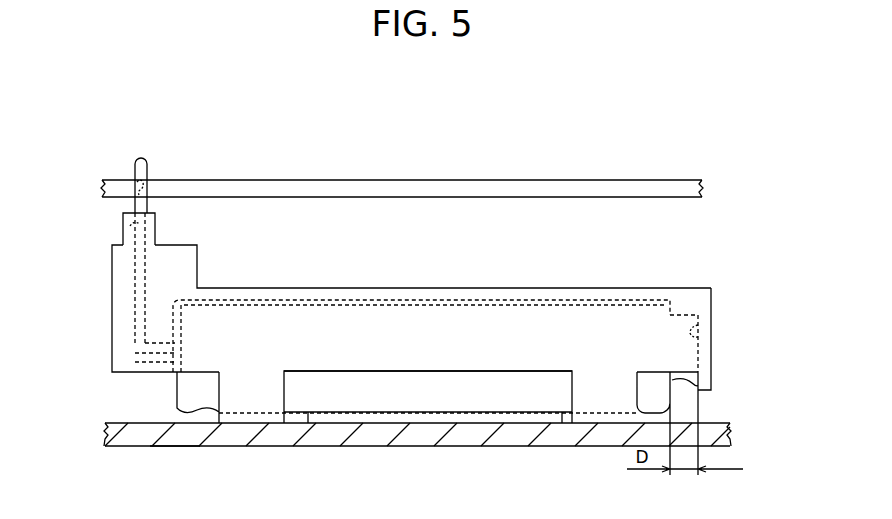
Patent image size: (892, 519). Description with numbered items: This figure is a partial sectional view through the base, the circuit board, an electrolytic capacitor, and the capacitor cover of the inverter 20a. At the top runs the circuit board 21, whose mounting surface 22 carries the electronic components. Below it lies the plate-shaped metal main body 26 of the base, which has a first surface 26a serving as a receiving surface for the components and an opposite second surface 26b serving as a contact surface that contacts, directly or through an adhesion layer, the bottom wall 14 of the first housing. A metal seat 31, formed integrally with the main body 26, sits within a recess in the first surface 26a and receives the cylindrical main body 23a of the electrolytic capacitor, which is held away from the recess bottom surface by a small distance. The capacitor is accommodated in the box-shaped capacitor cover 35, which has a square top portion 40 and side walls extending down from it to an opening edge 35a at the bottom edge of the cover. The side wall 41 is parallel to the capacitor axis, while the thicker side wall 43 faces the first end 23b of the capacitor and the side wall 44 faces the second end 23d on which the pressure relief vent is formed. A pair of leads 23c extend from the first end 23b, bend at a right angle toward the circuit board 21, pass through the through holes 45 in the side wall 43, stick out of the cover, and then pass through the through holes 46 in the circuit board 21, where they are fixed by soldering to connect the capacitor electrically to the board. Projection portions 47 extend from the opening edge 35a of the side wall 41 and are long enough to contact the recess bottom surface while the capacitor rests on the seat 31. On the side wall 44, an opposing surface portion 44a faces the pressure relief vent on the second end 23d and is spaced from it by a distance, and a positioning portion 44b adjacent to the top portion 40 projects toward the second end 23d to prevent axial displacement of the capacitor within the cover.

The bottom wall 14 is at (174, 447).
The inverter 20a is at (723, 265).
The circuit board 21 is at (694, 153).
The mounting surface 22 is at (553, 180).
The main body 23a is at (510, 400).
The first end 23b is at (175, 377).
The leads 23c is at (148, 175).
The second end 23d is at (700, 388).
The main body 26 is at (399, 444).
The first surface 26a is at (140, 423).
The second surface 26b is at (140, 446).
The seat 31 is at (397, 418).
The capacitor cover 35 is at (245, 283).
The opening edge 35a is at (438, 373).
The top portion 40 is at (340, 300).
The side wall 41 is at (408, 316).
The side wall 43 is at (112, 293).
The side wall 44 is at (712, 301).
The opposing surface portion 44a is at (699, 330).
The positioning portion 44b is at (687, 306).
The through holes 45 is at (130, 233).
The through holes 46 is at (133, 175).
The projection portions 47 is at (252, 418).